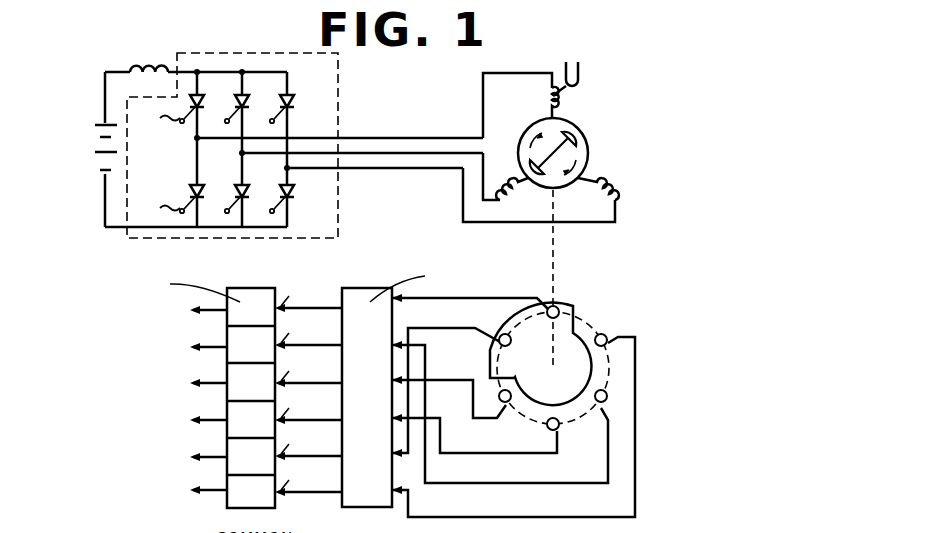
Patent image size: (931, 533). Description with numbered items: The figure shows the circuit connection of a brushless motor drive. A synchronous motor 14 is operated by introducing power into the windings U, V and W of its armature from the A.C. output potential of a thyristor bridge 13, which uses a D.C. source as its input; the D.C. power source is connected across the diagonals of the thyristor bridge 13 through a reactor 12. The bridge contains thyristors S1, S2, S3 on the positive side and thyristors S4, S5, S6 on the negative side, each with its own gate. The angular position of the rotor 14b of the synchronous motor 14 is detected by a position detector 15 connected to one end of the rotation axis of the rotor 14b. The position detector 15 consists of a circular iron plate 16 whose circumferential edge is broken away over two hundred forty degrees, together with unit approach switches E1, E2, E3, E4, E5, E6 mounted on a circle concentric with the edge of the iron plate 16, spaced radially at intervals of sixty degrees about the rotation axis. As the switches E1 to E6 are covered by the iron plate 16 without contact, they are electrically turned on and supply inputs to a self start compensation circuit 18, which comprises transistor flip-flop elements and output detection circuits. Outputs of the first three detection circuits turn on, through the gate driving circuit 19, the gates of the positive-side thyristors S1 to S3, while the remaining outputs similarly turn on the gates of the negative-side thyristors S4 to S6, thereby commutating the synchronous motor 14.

The reactor 12 is at (150, 68).
The thyristor bridge 13 is at (305, 128).
The synchronous motor 14 is at (616, 127).
The rotor 14b is at (630, 111).
The position detector 15 is at (578, 382).
The circular iron plate 16 is at (566, 303).
The self start compensation circuit 18 is at (362, 290).
The gate driving circuit 19 is at (246, 292).
The thyristor S1 is at (217, 86).
The thyristor S2 is at (262, 86).
The thyristor S3 is at (308, 86).
The thyristor S4 is at (217, 186).
The thyristor S5 is at (262, 186).
The thyristor S6 is at (308, 186).
The unit approach switch E1 is at (556, 306).
The unit approach switch E2 is at (606, 400).
The unit approach switch E3 is at (507, 403).
The unit approach switch E4 is at (560, 428).
The unit approach switch E5 is at (503, 336).
The unit approach switch E6 is at (607, 344).